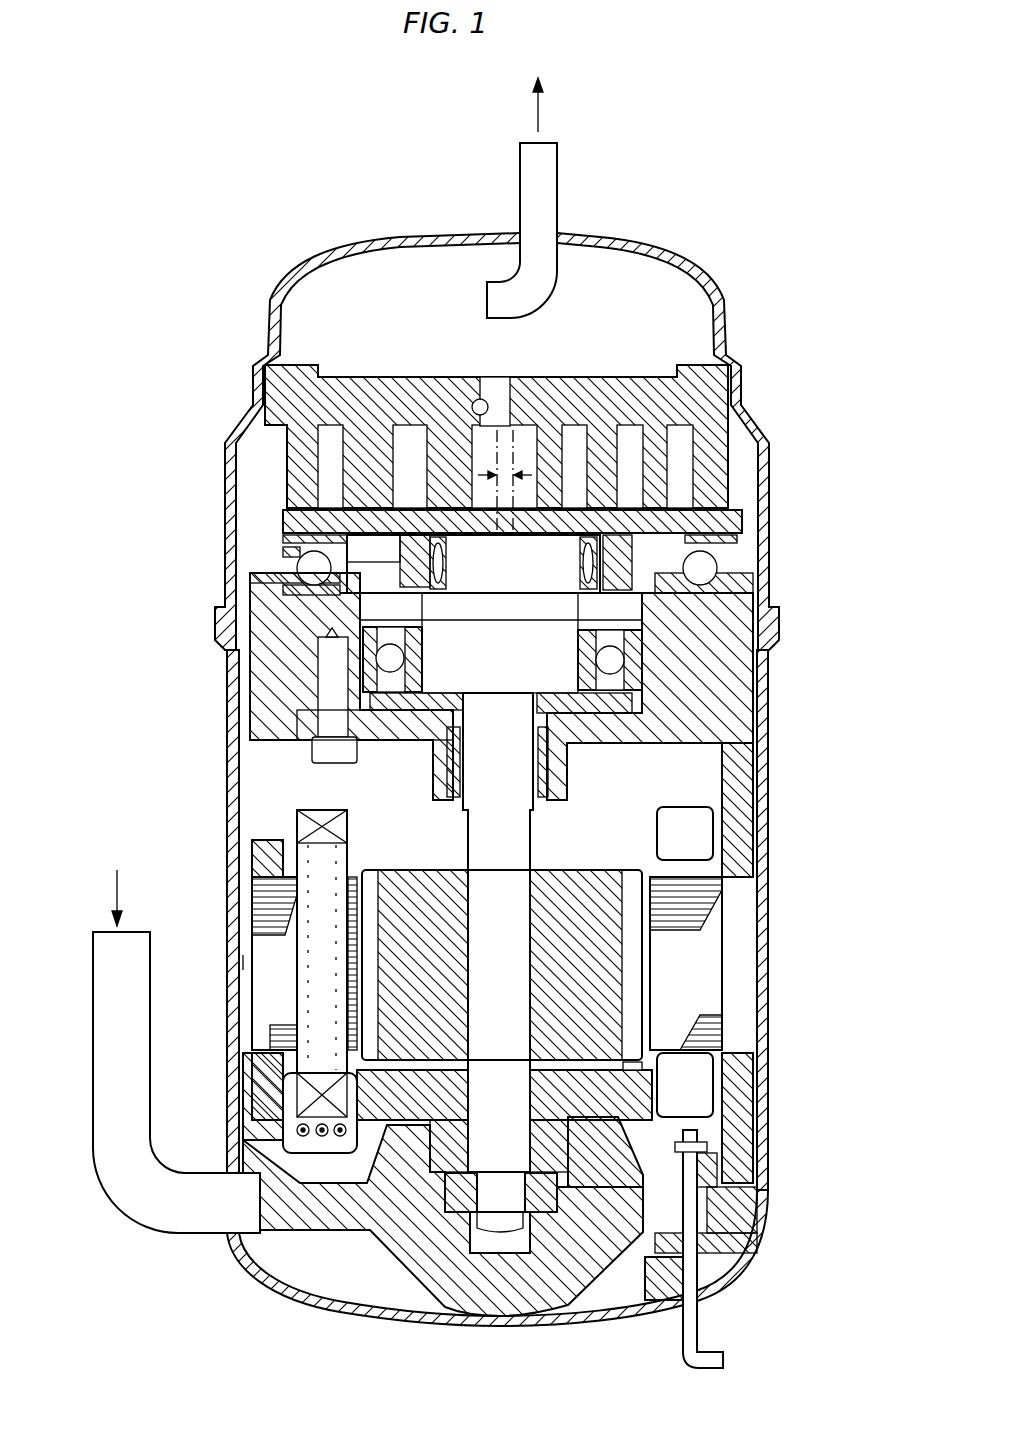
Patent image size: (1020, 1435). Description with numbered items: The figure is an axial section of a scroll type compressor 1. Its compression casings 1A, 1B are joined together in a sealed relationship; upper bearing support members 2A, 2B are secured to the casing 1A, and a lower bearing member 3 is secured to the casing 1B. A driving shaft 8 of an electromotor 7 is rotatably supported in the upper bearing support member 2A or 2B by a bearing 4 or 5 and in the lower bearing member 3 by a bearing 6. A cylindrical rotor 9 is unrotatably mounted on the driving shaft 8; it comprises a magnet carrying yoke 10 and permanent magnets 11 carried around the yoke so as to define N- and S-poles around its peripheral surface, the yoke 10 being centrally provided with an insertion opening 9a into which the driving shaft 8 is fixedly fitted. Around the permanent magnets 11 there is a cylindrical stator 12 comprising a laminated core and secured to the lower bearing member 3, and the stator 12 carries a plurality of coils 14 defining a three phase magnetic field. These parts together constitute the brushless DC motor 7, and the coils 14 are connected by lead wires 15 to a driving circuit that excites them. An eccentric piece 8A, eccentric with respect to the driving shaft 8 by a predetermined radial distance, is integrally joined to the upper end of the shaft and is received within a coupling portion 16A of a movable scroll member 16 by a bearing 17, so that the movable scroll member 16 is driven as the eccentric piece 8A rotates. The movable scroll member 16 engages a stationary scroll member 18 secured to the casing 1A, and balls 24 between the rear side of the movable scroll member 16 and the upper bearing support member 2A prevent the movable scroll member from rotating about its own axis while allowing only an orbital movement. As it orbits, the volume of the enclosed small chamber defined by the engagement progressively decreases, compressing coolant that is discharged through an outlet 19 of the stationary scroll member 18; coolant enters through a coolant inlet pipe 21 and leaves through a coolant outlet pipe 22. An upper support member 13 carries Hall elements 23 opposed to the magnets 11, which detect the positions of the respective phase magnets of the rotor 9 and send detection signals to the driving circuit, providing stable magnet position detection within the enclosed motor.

The compressor 1 is at (464, 779).
The compression casing 1A is at (226, 520).
The compression casing 1B is at (235, 750).
The upper bearing support member 2A is at (451, 686).
The upper bearing support member 2B is at (377, 745).
The lower bearing member 3 is at (347, 1222).
The bearing 4 is at (453, 745).
The bearing 5 is at (396, 660).
The bearing 6 is at (443, 1193).
The electromotor 7 is at (242, 960).
The driving shaft 8 is at (513, 1023).
The eccentric piece 8A is at (562, 584).
The rotor 9 is at (502, 915).
The insertion opening 9a is at (532, 960).
The magnet carrying yoke 10 is at (441, 993).
The permanent magnets 11 is at (502, 963).
The stator 12 is at (289, 993).
The upper support member 13 is at (414, 1111).
The coils 14 is at (339, 966).
The lead wires 15 is at (682, 1333).
The movable scroll member 16 is at (495, 512).
The coupling portion 16A is at (432, 560).
The bearing 17 is at (447, 561).
The stationary scroll member 18 is at (439, 443).
The outlet 19 is at (478, 403).
The coolant inlet pipe 21 is at (135, 1020).
The coolant outlet pipe 22 is at (520, 205).
The Hall elements 23 is at (635, 1067).
The balls 24 is at (714, 571).